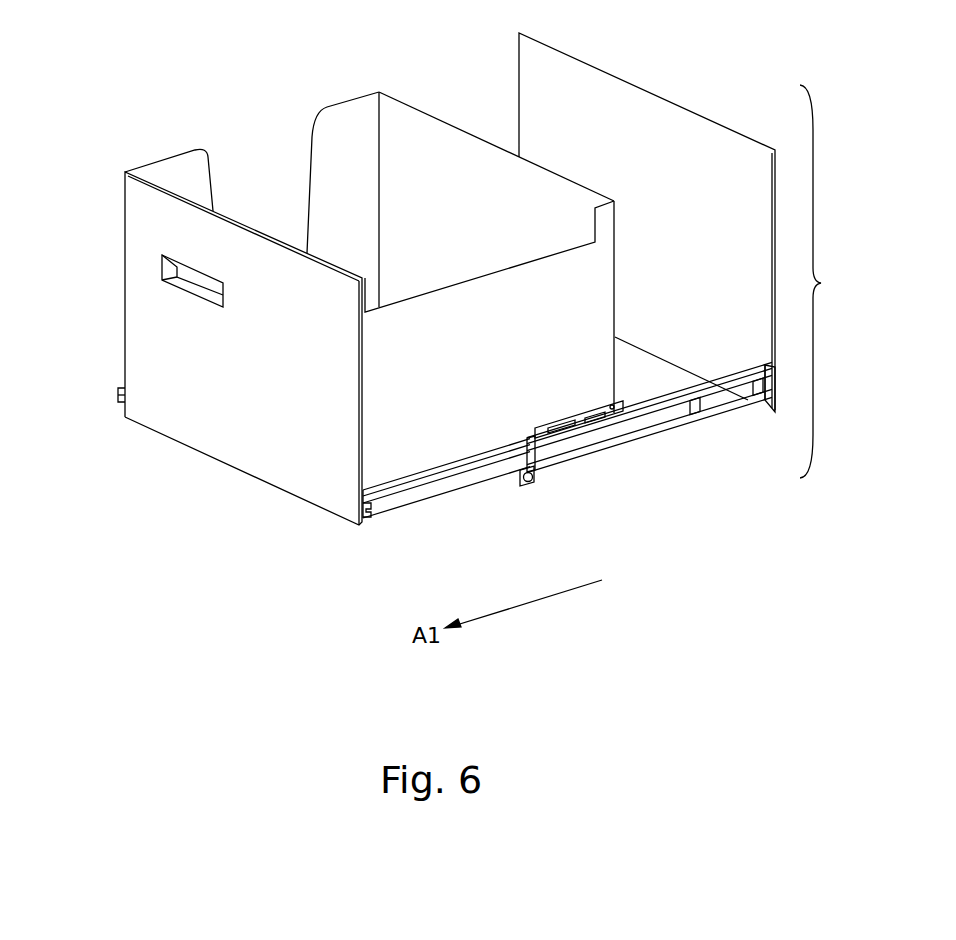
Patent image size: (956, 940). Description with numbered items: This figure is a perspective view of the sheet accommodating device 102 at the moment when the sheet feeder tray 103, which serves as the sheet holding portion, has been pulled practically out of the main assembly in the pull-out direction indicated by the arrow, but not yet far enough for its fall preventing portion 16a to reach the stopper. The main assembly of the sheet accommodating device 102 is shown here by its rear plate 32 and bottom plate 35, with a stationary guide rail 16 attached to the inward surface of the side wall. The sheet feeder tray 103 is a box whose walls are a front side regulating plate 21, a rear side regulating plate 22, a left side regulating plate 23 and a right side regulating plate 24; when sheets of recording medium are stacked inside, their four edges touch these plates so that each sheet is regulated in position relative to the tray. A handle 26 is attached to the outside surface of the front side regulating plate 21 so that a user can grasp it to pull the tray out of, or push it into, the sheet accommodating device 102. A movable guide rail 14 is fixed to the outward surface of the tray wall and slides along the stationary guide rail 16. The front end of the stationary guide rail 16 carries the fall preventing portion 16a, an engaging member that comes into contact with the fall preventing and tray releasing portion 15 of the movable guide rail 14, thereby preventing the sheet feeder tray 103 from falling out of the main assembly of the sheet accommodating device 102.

The movable guide rail 14 is at (117, 395).
The fall preventing and tray releasing portion 15 is at (573, 440).
The stationary guide rail 16 is at (640, 436).
The fall preventing portion 16a is at (540, 455).
The front side regulating plate 21 is at (270, 460).
The rear side regulating plate 22 is at (427, 145).
The left side regulating plate 23 is at (342, 140).
The right side regulating plate 24 is at (590, 267).
The handle 26 is at (178, 285).
The rear plate 32 is at (656, 92).
The bottom plate 35 is at (660, 373).
The sheet accommodating device 102 is at (834, 281).
The sheet feeder tray 103 is at (184, 424).